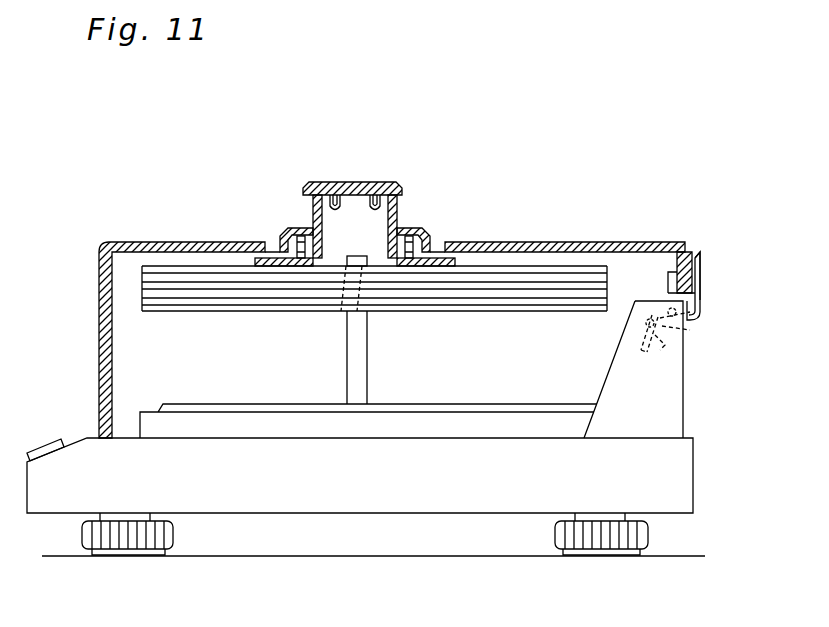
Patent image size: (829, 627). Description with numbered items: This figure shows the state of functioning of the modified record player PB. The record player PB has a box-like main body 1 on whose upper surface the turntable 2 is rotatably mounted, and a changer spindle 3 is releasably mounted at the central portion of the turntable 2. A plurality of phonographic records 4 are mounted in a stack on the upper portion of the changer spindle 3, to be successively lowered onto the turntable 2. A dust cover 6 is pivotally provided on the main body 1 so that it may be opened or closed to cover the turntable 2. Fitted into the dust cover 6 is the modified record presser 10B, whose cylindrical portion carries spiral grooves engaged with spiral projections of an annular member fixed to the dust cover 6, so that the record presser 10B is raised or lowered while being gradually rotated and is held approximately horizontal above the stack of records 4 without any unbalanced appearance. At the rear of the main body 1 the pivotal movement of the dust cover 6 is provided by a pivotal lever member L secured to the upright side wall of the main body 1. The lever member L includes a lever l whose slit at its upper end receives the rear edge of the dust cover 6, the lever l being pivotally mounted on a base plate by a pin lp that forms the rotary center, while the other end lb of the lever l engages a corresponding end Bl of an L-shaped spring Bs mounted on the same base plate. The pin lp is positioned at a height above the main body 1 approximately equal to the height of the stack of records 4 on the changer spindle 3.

The main body 1 is at (330, 492).
The turntable 2 is at (160, 432).
The changer spindle 3 is at (367, 371).
The phonographic records 4 is at (492, 280).
The dust cover 6 is at (605, 242).
The modified record presser 10B is at (400, 176).
The modified record player PB is at (414, 252).
The pivotal lever member L is at (703, 262).
The lever l is at (703, 280).
The pin lp is at (676, 312).
The other end of lever lb is at (690, 330).
The end of spring Bl is at (642, 336).
The L-shaped spring Bs is at (640, 327).